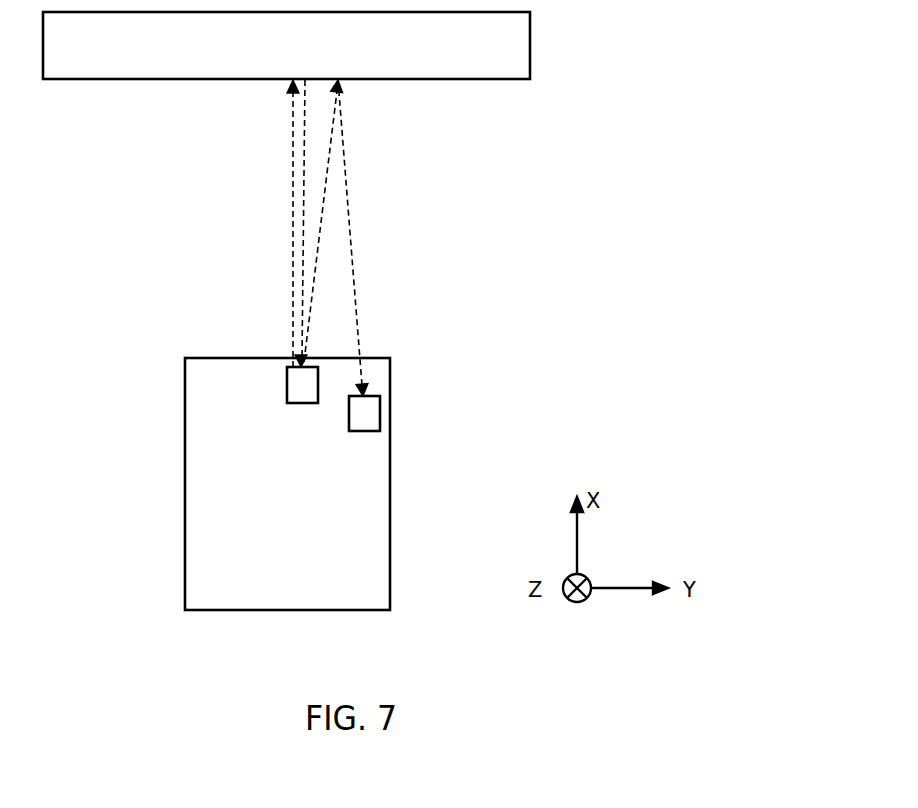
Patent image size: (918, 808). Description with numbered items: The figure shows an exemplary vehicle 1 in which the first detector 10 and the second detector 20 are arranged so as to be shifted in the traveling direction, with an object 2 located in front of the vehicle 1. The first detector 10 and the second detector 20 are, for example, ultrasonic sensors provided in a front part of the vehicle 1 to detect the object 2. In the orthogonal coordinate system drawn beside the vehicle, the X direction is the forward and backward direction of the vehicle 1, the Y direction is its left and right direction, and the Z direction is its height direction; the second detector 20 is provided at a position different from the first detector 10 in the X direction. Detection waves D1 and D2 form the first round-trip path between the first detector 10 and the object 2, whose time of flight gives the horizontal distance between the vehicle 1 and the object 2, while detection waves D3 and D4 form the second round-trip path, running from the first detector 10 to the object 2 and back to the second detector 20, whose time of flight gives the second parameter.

The object 2 is at (531, 34).
The vehicle 1 is at (185, 500).
The first detector 10 is at (287, 392).
The second detector 20 is at (381, 410).
The detection wave D1 is at (293, 246).
The detection wave D2 is at (305, 203).
The detection wave D3 is at (326, 198).
The detection wave D4 is at (352, 266).